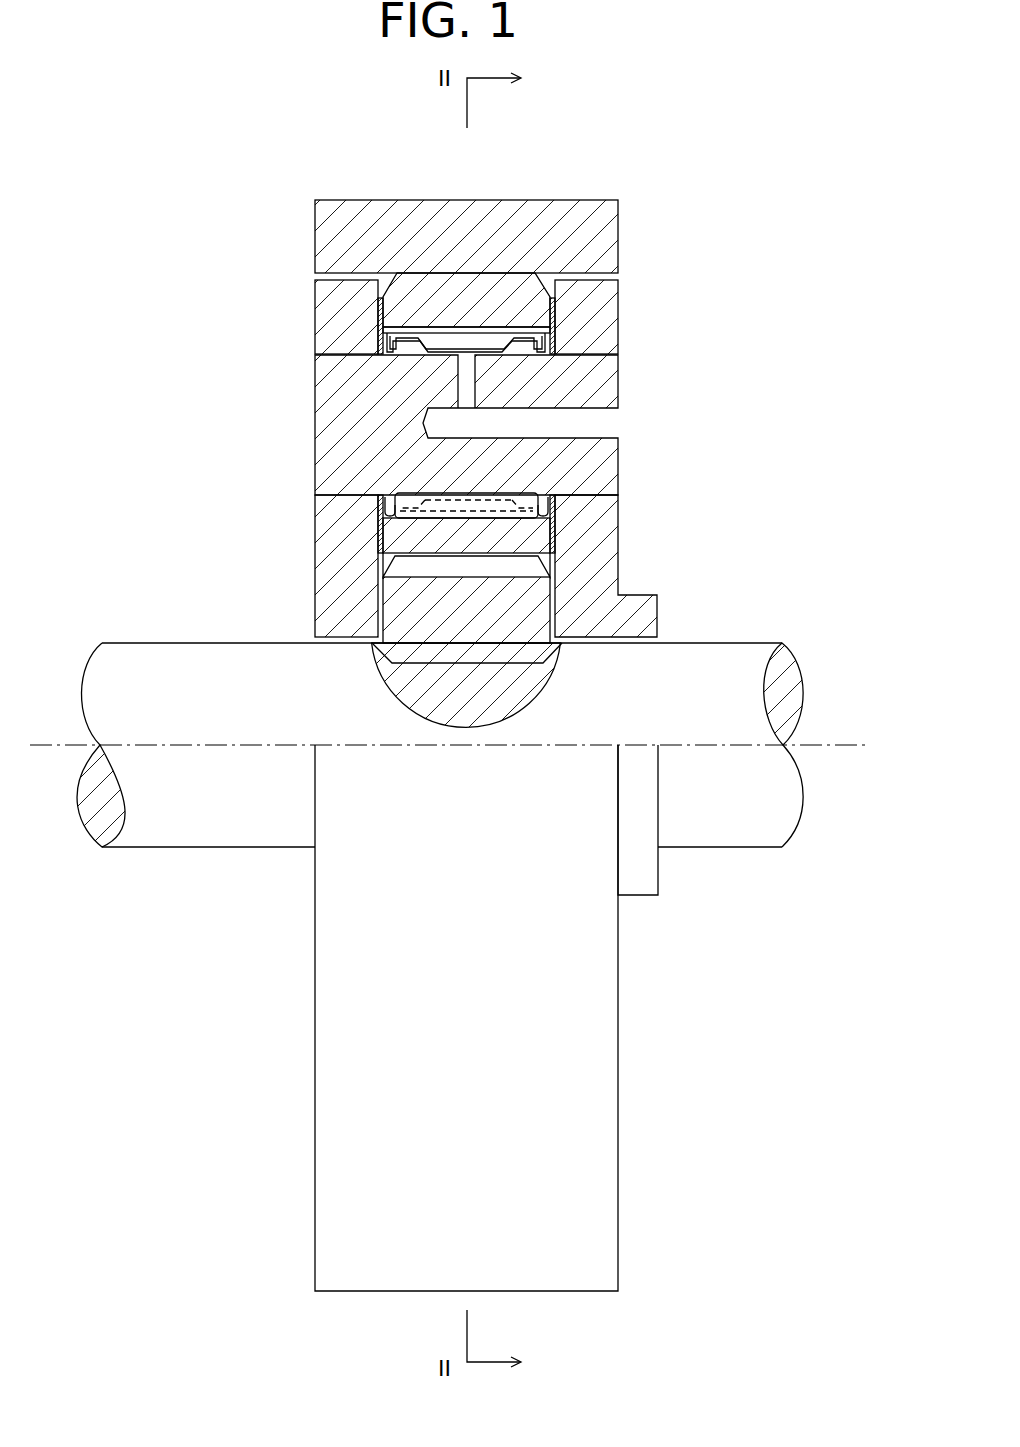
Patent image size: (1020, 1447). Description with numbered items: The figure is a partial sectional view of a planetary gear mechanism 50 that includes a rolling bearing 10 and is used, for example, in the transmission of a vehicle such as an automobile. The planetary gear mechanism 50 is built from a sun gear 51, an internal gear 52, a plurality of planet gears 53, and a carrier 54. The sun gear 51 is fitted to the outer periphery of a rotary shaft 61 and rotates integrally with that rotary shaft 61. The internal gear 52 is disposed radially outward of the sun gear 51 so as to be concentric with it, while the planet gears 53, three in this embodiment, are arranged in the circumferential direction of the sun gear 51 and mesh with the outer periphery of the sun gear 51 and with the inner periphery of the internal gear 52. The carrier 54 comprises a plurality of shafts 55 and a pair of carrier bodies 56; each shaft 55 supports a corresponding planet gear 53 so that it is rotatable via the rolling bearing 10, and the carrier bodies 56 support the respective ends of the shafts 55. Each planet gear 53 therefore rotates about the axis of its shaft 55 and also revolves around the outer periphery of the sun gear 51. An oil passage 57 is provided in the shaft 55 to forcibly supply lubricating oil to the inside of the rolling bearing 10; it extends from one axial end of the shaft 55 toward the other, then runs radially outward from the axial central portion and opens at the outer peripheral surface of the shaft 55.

The rolling bearing 10 is at (440, 320).
The planetary gear mechanism 50 is at (268, 318).
The sun gear 51 is at (397, 610).
The internal gear 52 is at (580, 210).
The planet gear 53 is at (547, 290).
The carrier 54 is at (620, 393).
The shaft 55 is at (593, 465).
The carrier body 56 is at (335, 330).
The oil passage 57 is at (578, 415).
The rotary shaft 61 is at (145, 672).